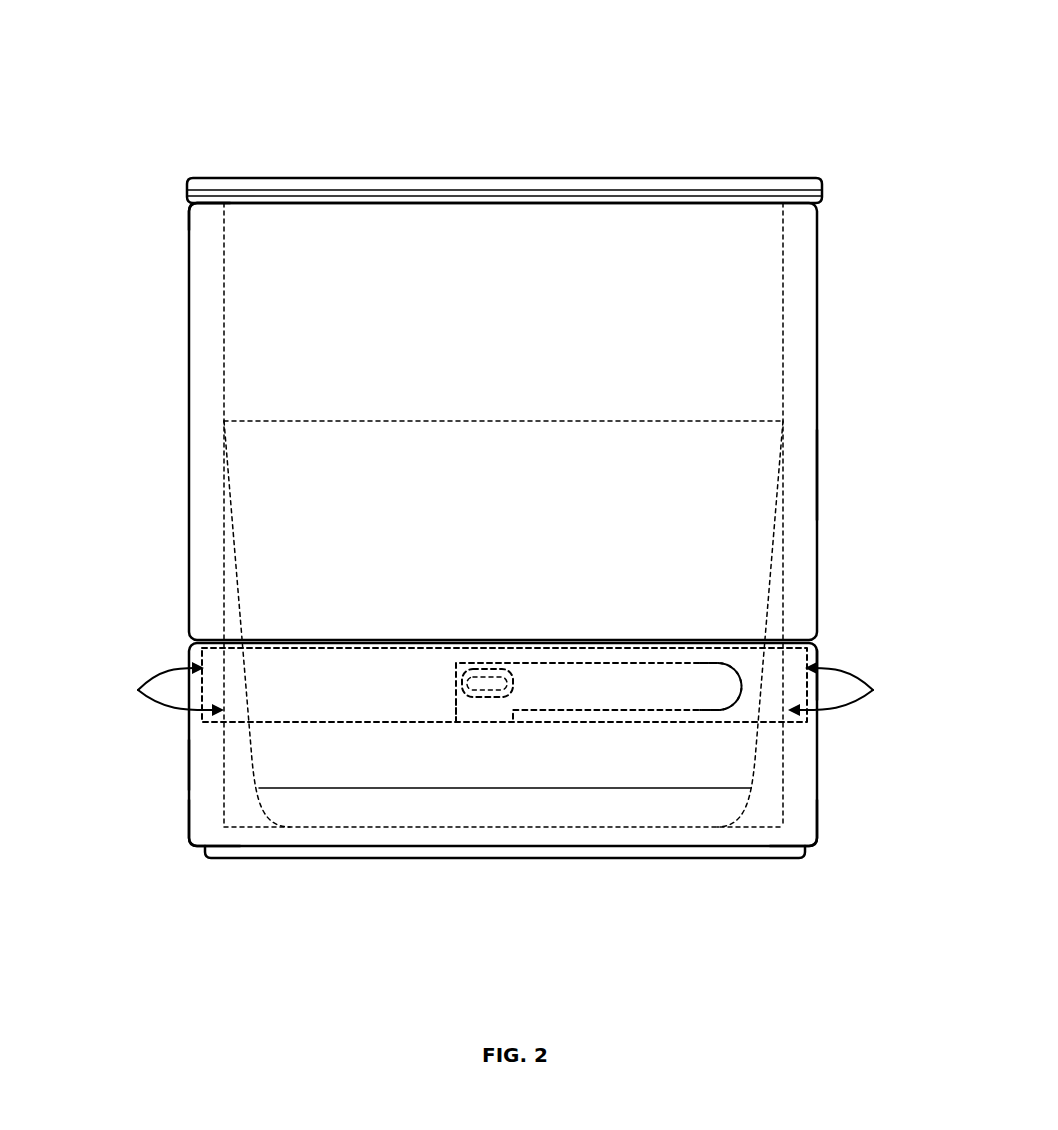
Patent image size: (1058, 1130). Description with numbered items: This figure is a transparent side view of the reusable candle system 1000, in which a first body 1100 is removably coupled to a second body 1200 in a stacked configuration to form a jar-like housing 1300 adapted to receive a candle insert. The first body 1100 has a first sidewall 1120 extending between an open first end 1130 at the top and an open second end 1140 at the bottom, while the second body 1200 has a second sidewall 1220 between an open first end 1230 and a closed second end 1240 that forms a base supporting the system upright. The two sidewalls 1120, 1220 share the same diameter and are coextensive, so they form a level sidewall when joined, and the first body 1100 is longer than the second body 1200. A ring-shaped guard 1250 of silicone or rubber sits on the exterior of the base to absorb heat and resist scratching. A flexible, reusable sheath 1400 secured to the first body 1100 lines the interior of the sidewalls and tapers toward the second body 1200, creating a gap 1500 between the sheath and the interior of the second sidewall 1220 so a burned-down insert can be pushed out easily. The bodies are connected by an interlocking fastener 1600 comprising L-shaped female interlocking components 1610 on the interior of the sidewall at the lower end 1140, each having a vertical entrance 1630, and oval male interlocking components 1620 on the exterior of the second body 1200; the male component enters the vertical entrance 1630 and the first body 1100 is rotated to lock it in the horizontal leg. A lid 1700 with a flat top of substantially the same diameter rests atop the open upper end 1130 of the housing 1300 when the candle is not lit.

The reusable candle system 1000 is at (750, 92).
The first body 1100 is at (817, 377).
The first sidewall 1120 is at (817, 470).
The open first end 1130 is at (189, 203).
The open second end 1140 is at (188, 636).
The second body 1200 is at (795, 790).
The second sidewall 1220 is at (187, 834).
The open first end 1230 is at (817, 660).
The closed second end 1240 is at (817, 843).
The guard 1250 is at (718, 858).
The housing 1300 is at (188, 763).
The sheath 1400 is at (767, 280).
The gap 1500 is at (247, 808).
The interlocking fastener 1600 is at (617, 663).
The female interlocking component 1610 is at (705, 680).
The male interlocking component 1620 is at (488, 697).
The vertical entrance 1630 is at (457, 715).
The lid 1700 is at (218, 178).